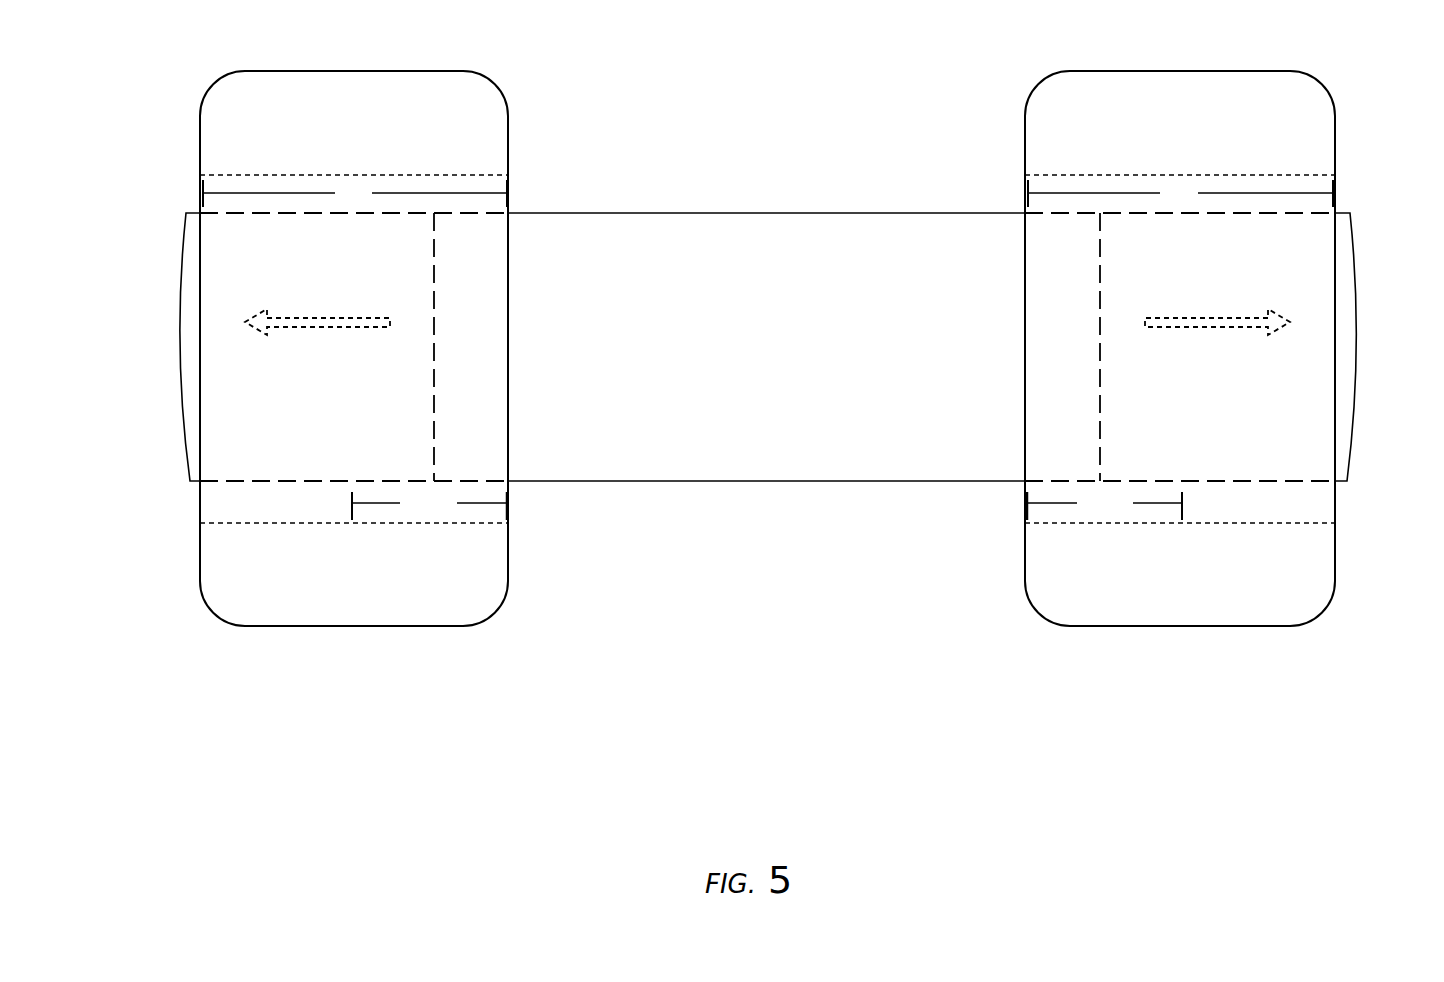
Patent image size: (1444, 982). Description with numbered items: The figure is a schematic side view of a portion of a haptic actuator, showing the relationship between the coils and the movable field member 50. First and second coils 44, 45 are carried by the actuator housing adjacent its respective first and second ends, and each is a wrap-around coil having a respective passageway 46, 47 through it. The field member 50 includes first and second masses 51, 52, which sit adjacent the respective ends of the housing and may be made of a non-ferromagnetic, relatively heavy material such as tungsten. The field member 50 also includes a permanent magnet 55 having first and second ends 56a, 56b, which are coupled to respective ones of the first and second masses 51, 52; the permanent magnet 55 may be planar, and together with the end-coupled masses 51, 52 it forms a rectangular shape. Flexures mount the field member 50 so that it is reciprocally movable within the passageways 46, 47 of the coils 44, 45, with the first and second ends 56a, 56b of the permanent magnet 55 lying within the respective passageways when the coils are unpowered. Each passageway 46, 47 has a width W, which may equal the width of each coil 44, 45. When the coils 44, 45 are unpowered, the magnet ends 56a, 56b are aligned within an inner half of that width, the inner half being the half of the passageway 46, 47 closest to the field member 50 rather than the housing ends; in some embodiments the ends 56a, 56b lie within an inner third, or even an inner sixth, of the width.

The first coil 44 is at (322, 107).
The second coil 45 is at (1213, 107).
The passageway of the first coil 46 is at (233, 204).
The passageway of the second coil 47 is at (1302, 204).
The field member 50 is at (801, 585).
The first mass 51 is at (178, 285).
The second mass 52 is at (1360, 285).
The permanent magnet 55 is at (708, 453).
The first end of the permanent magnet 56a is at (434, 453).
The second end of the permanent magnet 56b is at (1100, 453).